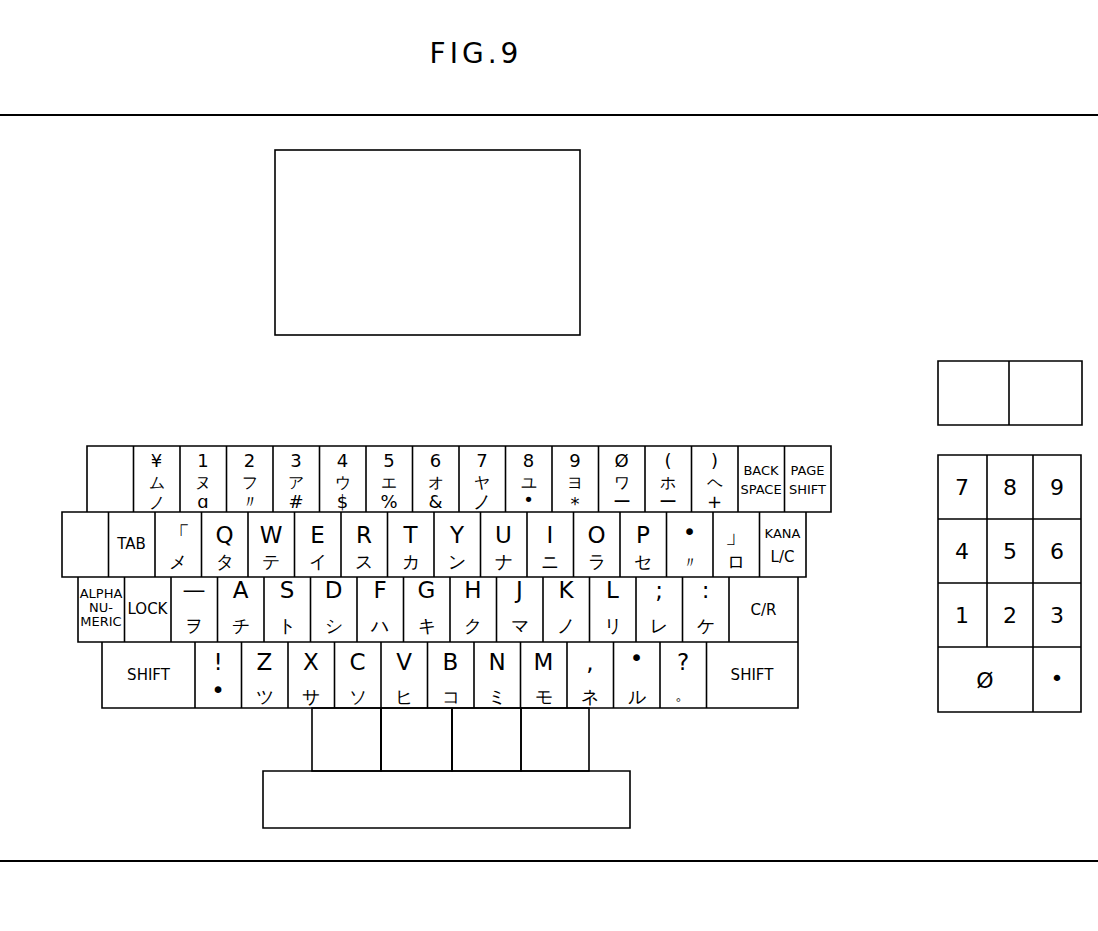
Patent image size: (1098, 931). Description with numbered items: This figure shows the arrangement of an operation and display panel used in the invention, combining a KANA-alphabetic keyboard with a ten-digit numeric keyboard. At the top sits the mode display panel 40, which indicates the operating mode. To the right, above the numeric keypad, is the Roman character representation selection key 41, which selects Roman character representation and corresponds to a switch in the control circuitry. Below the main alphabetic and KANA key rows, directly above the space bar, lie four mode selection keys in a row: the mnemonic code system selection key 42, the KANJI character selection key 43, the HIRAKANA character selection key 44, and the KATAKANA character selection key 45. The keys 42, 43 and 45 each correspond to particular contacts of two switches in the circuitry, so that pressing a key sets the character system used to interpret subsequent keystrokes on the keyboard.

The mode display panel 40 is at (580, 228).
The Roman character representation selection key 41 is at (1042, 360).
The mnemonic code system selection key 42 is at (348, 771).
The KANJI character selection key 43 is at (424, 771).
The HIRAKANA character selection key 44 is at (498, 771).
The KATAKANA character selection key 45 is at (550, 771).